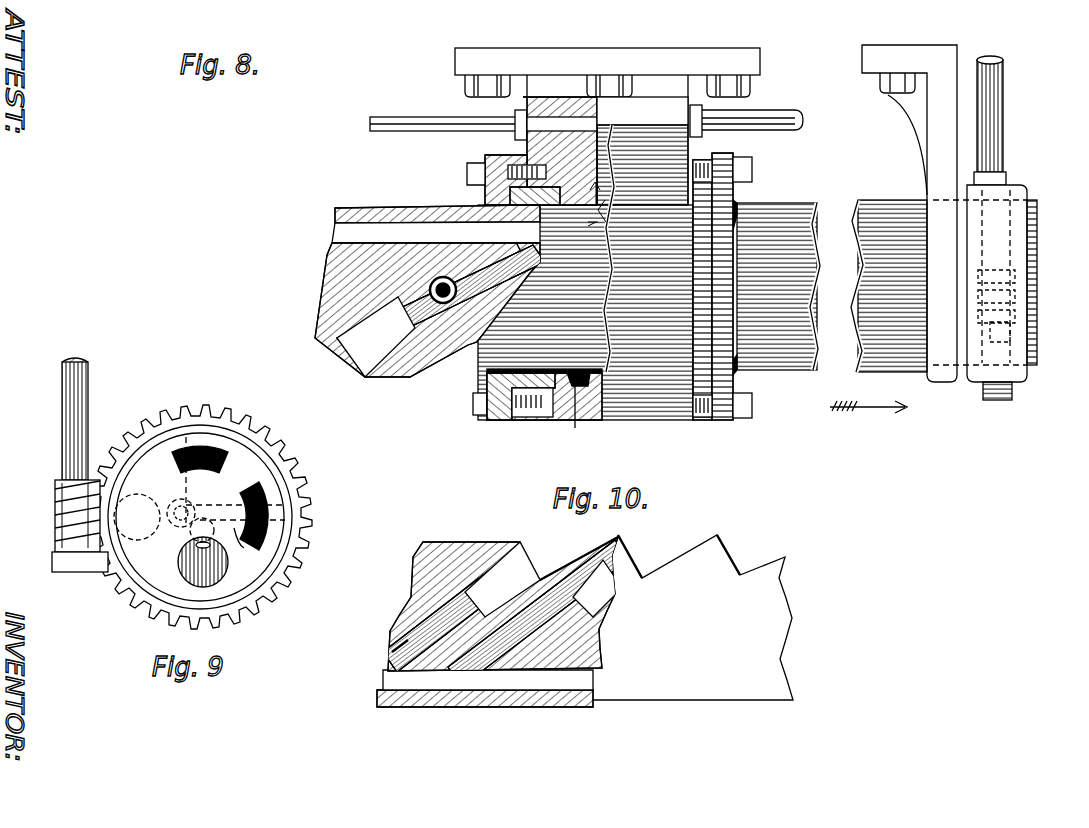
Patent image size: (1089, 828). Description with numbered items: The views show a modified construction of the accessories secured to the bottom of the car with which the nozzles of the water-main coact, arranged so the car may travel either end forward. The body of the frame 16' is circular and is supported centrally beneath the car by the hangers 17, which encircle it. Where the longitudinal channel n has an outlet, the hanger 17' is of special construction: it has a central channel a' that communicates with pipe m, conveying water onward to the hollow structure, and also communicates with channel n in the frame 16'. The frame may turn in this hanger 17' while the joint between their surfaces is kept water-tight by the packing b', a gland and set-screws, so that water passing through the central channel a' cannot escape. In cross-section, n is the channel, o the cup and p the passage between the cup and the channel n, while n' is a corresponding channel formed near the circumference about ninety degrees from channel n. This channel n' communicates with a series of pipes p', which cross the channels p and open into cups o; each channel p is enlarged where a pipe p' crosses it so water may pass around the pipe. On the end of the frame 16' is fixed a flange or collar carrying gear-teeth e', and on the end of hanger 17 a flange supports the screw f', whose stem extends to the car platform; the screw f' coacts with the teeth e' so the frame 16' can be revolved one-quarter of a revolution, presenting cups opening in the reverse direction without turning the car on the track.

In FIG. 8, the hanger 17' is at (607, 43).
In FIG. 8, the hangers 17 is at (919, 197).
In FIG. 8, the frame 16' is at (1005, 228).
In FIG. 9, the frame 16' is at (309, 546).
In FIG. 10, the frame 16' is at (713, 617).
In FIG. 8, the pipe m is at (386, 120).
In FIG. 8, the central channel a' is at (605, 223).
In FIG. 8, the packing b' is at (578, 409).
In FIG. 8, the channel n is at (427, 291).
In FIG. 9, the channel n is at (200, 453).
In FIG. 9, the channel n' is at (280, 506).
In FIG. 10, the channel n' is at (485, 688).
In FIG. 8, the cup o is at (362, 342).
In FIG. 9, the cup o is at (171, 540).
In FIG. 10, the cup o is at (522, 568).
In FIG. 8, the passage p is at (512, 237).
In FIG. 9, the passage p is at (226, 489).
In FIG. 8, the pipes p' is at (445, 304).
In FIG. 9, the pipes p' is at (249, 544).
In FIG. 10, the pipes p' is at (419, 678).
In FIG. 9, the gear-teeth e' is at (200, 502).
In FIG. 9, the screw f' is at (69, 465).